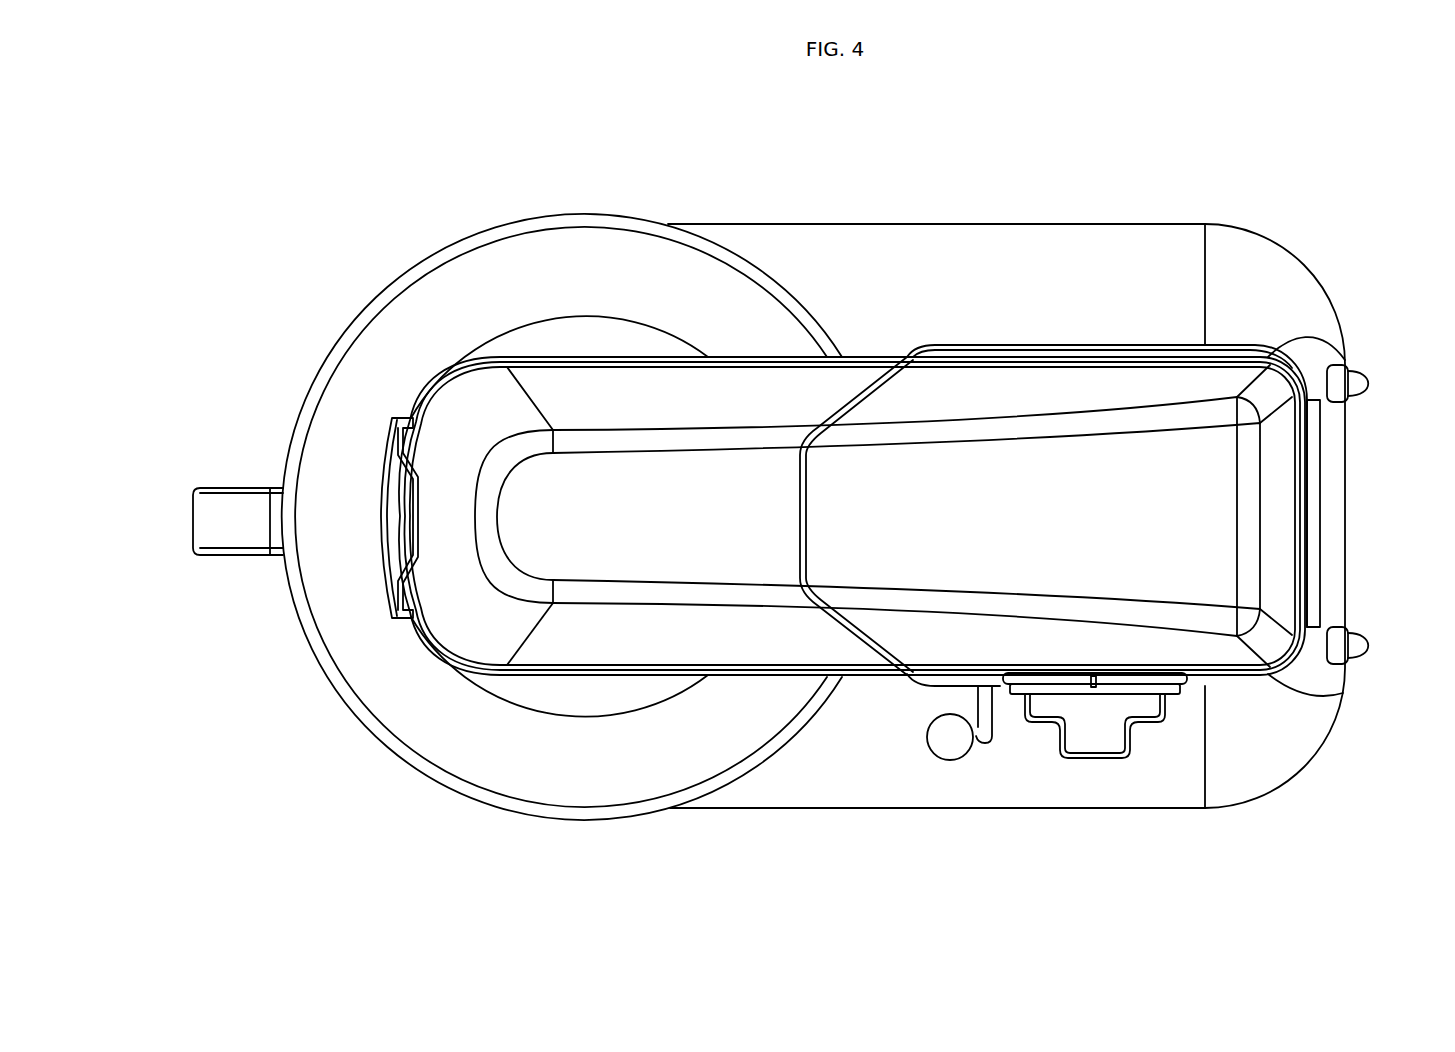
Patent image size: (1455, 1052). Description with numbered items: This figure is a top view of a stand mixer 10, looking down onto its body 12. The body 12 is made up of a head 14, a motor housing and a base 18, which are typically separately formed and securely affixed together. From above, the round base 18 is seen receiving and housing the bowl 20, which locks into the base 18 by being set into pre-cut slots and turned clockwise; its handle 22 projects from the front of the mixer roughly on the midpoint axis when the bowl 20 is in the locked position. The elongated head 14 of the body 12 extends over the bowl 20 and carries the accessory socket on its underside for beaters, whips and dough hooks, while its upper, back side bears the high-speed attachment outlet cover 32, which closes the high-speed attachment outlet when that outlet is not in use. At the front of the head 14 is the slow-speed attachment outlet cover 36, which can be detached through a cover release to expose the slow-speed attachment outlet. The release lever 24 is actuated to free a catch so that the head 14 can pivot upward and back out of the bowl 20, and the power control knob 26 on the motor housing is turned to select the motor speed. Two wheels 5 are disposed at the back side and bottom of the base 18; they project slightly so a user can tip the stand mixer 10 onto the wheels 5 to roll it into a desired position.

The stand mixer 10 is at (318, 256).
The body 12 is at (1264, 288).
The head 14 is at (692, 493).
The base 18 is at (1120, 262).
The bowl 20 is at (488, 280).
The handle 22 is at (225, 522).
The release lever 24 is at (948, 745).
The power control knob 26 is at (1090, 732).
The high-speed attachment outlet cover 32 is at (1093, 522).
The slow-speed attachment outlet cover 36 is at (395, 513).
The wheel 5 is at (1347, 383).